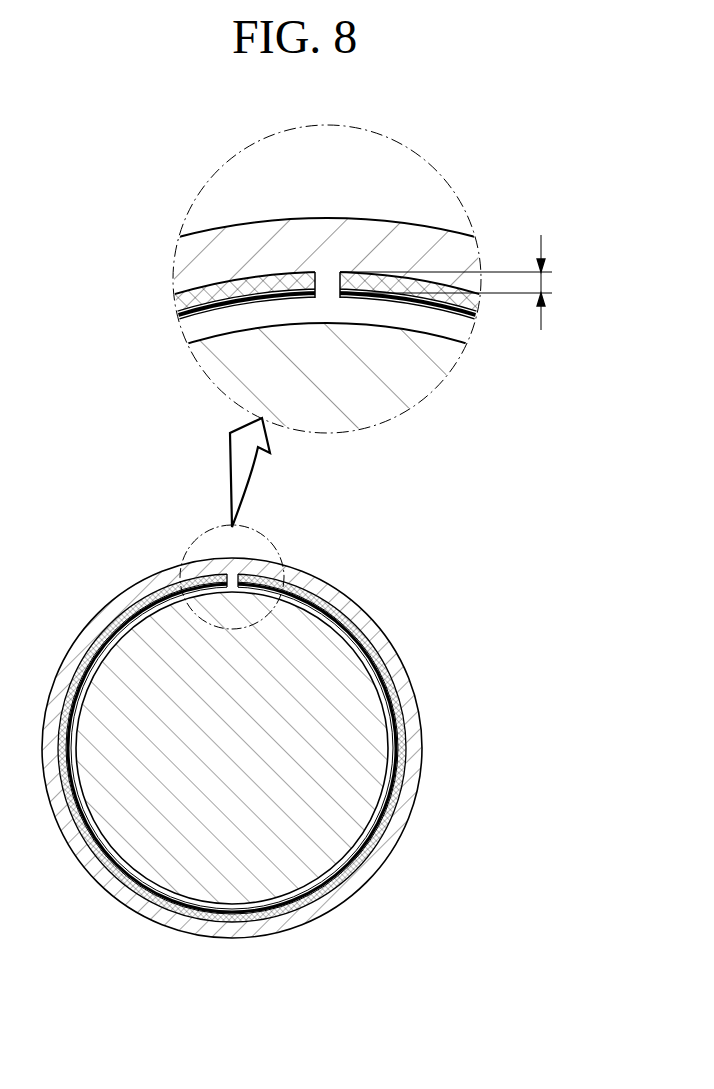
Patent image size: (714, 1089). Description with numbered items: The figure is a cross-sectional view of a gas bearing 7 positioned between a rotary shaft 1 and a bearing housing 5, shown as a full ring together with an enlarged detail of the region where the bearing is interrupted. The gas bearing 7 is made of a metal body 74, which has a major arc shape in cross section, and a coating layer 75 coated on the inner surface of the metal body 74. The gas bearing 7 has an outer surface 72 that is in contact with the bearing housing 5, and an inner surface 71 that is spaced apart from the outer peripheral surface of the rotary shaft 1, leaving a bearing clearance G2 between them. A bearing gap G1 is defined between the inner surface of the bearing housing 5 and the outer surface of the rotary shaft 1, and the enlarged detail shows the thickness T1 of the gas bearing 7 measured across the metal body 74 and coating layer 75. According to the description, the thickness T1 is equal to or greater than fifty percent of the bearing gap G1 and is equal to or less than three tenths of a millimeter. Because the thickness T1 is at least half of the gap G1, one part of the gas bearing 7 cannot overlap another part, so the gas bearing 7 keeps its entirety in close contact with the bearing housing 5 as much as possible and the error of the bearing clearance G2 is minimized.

The rotary shaft 1 is at (392, 404).
The bearing housing 5 is at (222, 244).
The gas bearing 7 is at (357, 680).
The inner surface 71 is at (239, 302).
The outer surface 72 is at (287, 272).
The metal body 74 is at (176, 297).
The coating layer 75 is at (186, 317).
The bearing gap G1 is at (333, 282).
The bearing clearance G2 is at (400, 312).
The thickness T1 is at (460, 282).